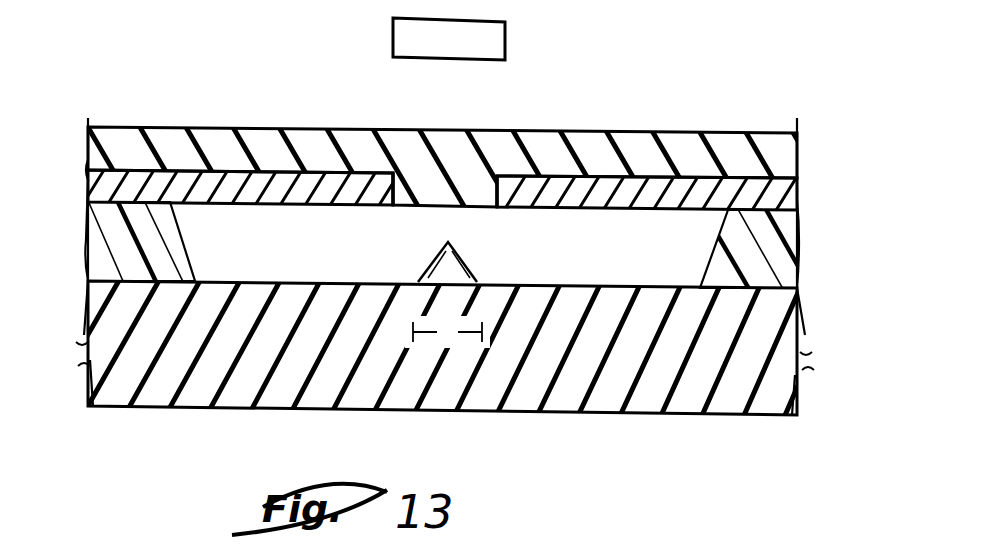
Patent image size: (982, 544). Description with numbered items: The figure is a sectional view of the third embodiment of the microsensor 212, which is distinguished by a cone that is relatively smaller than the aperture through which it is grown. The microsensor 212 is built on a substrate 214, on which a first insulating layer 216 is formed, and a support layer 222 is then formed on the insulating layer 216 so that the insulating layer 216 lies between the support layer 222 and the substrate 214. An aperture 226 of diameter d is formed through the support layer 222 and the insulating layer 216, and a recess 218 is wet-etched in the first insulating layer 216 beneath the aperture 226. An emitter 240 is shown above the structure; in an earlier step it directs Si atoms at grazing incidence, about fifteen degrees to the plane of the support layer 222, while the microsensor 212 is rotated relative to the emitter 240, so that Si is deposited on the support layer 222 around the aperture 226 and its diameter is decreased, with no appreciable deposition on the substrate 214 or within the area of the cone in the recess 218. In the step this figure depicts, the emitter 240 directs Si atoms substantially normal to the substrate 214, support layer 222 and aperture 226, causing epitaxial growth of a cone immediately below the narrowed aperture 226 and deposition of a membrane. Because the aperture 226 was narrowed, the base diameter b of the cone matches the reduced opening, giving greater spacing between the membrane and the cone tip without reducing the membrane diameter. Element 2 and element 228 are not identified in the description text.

The emitter 240 is at (505, 38).
The cover layer 228 is at (593, 148).
The aperture 226 is at (398, 190).
The support layer 222 is at (95, 186).
The first insulating layer 216 is at (100, 243).
The recess 218 is at (301, 256).
The projection 2 is at (463, 262).
The substrate 214 is at (718, 406).
The microsensor 212 is at (578, 443).